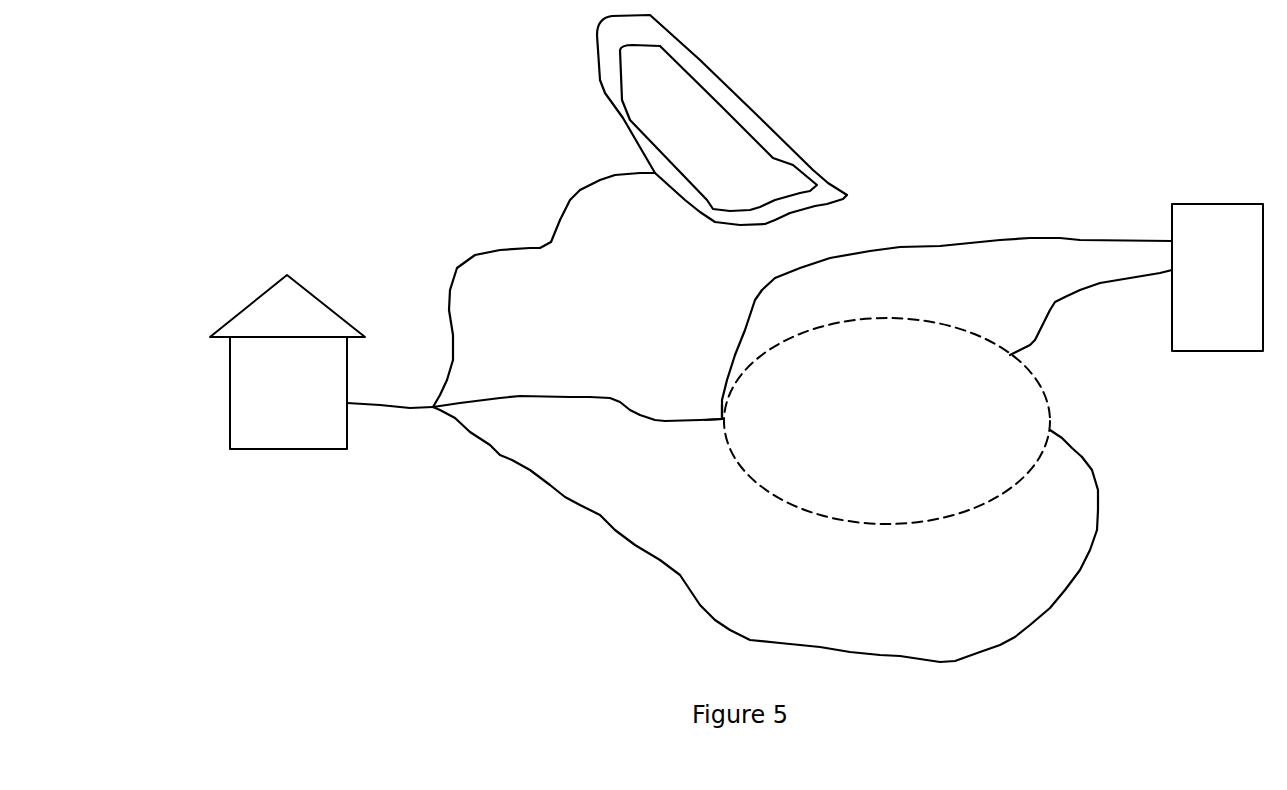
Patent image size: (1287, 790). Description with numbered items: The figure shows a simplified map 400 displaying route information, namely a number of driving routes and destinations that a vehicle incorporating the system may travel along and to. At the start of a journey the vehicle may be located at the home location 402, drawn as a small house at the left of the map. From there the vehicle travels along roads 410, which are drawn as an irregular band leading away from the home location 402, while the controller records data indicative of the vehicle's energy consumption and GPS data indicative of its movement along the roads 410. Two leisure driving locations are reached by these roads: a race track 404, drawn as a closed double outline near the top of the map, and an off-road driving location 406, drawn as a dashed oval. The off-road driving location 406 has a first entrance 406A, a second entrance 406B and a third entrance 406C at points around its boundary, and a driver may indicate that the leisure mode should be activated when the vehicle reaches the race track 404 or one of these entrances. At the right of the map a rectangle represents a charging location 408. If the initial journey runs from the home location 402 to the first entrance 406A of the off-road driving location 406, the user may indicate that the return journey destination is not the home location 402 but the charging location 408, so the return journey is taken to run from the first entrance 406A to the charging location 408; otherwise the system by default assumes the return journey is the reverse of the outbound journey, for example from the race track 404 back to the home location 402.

The simplified map 400 is at (247, 149).
The home location 402 is at (230, 373).
The race track 404 is at (606, 93).
The off-road driving location 406 is at (768, 492).
The first entrance 406A is at (722, 418).
The second entrance 406B is at (1050, 430).
The third entrance 406C is at (1008, 362).
The charging location 408 is at (1172, 218).
The roads 410 is at (746, 298).